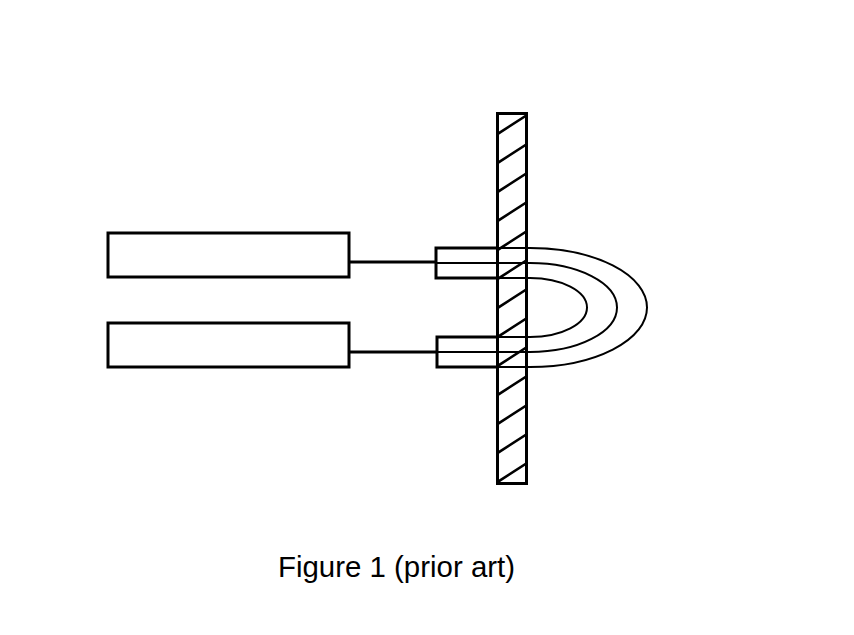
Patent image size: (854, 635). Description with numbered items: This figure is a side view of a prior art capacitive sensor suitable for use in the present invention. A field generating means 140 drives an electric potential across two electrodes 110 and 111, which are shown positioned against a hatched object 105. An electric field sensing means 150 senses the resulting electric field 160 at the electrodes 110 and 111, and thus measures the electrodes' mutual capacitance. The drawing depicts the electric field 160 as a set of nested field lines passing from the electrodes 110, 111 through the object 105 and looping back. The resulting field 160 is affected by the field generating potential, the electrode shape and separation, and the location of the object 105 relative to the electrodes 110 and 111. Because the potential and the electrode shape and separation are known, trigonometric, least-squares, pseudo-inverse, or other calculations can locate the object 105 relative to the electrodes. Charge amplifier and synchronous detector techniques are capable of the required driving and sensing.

The object 105 is at (497, 183).
The electrode 110 is at (436, 248).
The electrode 111 is at (437, 367).
The field generating means 140 is at (153, 232).
The electric field sensing means 150 is at (153, 368).
The electric field 160 is at (600, 247).